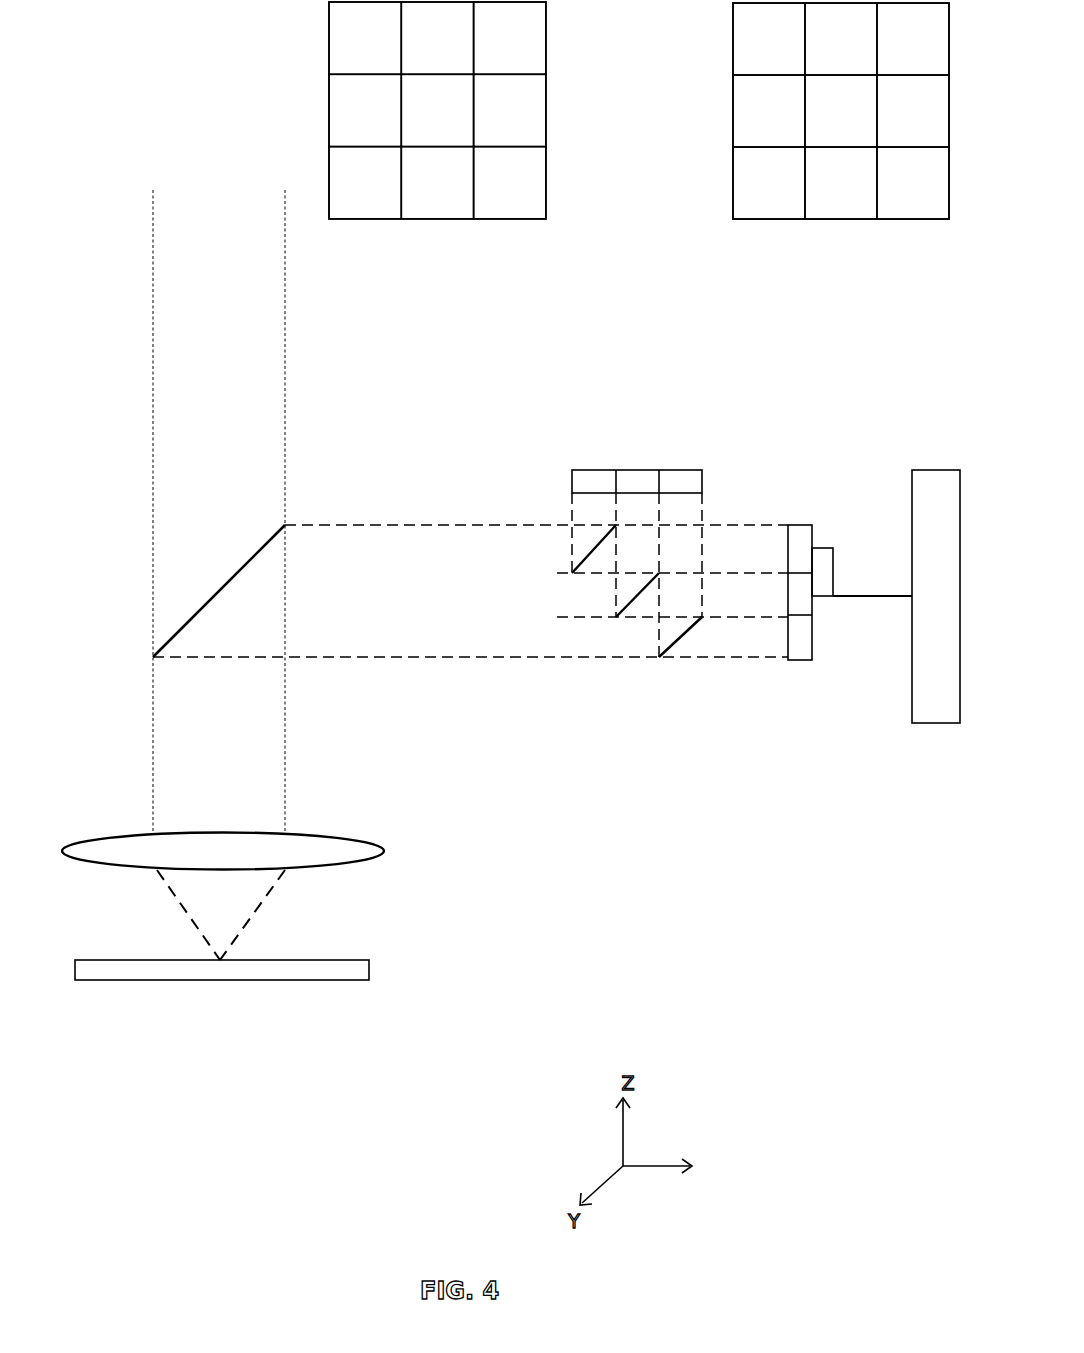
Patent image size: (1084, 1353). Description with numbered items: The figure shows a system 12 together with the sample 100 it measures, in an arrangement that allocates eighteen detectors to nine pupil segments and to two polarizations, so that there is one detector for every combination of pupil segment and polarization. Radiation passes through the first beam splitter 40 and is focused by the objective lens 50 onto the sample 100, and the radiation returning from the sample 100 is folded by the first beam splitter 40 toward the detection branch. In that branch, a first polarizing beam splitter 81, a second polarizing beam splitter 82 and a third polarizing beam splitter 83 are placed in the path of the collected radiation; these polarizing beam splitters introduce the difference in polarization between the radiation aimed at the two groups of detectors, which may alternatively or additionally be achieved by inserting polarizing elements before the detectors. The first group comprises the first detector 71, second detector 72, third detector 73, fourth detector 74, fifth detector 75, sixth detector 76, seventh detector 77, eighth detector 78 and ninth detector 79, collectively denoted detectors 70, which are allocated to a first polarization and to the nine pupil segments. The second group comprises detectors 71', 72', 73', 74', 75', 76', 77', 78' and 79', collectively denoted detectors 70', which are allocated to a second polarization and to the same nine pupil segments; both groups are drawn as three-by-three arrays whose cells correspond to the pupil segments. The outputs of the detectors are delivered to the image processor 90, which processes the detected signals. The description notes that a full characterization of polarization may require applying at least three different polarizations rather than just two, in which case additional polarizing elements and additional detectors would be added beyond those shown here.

The system 12 is at (146, 1173).
The first beam splitter 40 is at (220, 585).
The objective lens 50 is at (78, 843).
The detectors 70 is at (841, 219).
The detectors 70' is at (437, 213).
The first detector 71 is at (769, 39).
The second detector 72 is at (841, 39).
The third detector 73 is at (913, 39).
The fourth detector 74 is at (769, 111).
The fifth detector 75 is at (841, 111).
The sixth detector 76 is at (913, 111).
The seventh detector 77 is at (769, 183).
The eighth detector 78 is at (841, 183).
The ninth detector 79 is at (913, 183).
The detector 71' is at (365, 38).
The detector 72' is at (437, 38).
The detector 73' is at (510, 38).
The detector 74' is at (365, 110).
The detector 75' is at (437, 110).
The detector 76' is at (510, 110).
The detector 77' is at (365, 183).
The detector 78' is at (437, 183).
The detector 79' is at (510, 183).
The first polarizing beam splitter 81 is at (597, 541).
The second polarizing beam splitter 82 is at (640, 585).
The third polarizing beam splitter 83 is at (695, 626).
The image processor 90 is at (923, 608).
The sample 100 is at (372, 980).